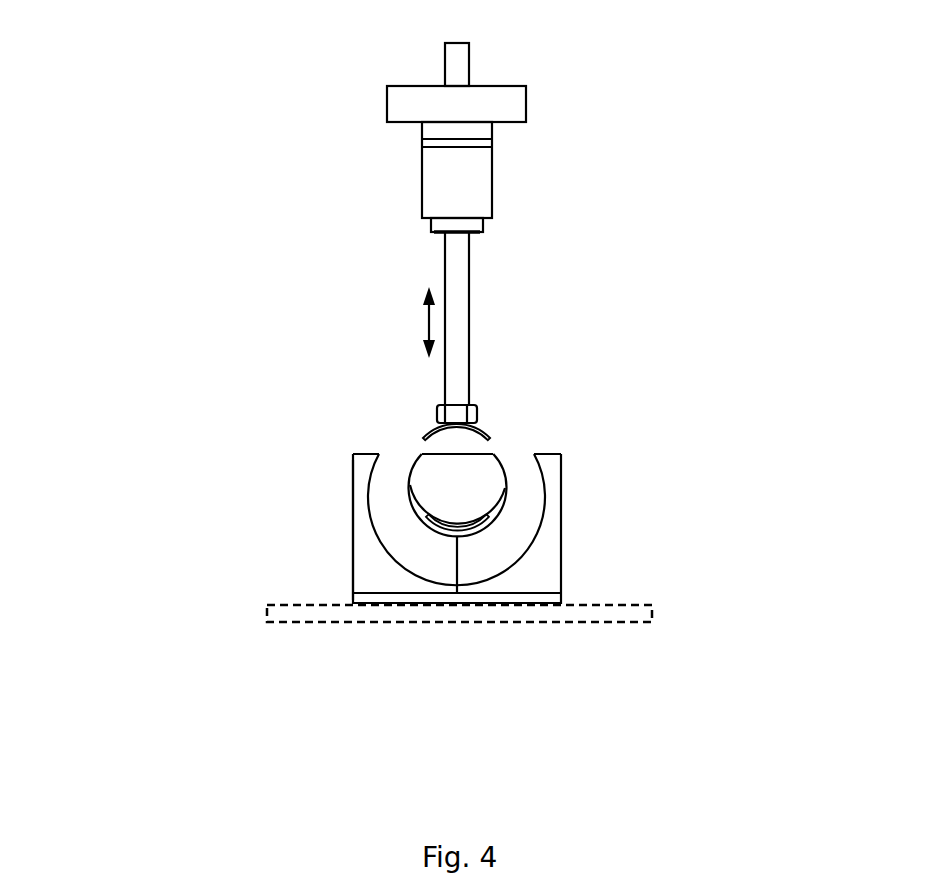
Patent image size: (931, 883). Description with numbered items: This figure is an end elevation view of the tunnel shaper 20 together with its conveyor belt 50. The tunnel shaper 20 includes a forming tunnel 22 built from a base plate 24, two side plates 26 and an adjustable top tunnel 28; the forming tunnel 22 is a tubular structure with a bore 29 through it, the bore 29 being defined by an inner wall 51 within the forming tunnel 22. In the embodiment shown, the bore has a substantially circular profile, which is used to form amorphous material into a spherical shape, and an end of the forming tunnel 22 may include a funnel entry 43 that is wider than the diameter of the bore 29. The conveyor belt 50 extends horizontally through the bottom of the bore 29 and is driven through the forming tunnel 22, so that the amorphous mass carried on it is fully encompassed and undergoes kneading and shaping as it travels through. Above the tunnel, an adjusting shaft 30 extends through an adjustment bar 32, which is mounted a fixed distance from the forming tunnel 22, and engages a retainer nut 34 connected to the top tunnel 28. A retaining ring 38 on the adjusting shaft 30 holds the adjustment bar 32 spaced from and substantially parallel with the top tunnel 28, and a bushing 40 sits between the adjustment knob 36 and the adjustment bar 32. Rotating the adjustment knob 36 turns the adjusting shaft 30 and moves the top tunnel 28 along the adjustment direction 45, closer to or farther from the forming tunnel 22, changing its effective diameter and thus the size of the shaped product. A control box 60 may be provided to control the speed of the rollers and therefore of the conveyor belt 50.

The tunnel shaper 20 is at (190, 115).
The forming tunnel 22 is at (477, 504).
The base plate 24 is at (561, 597).
The side plate 26 is at (363, 530).
The adjustable top tunnel 28 is at (490, 428).
The bore 29 is at (472, 488).
The adjusting shaft 30 is at (469, 318).
The adjustment bar 32 is at (492, 180).
The retainer nut 34 is at (437, 420).
The adjustment knob 36 is at (526, 105).
The retaining ring 38 is at (430, 228).
The bushing 40 is at (422, 143).
The funnel entry 43 is at (522, 516).
The adjustment direction 45 is at (424, 323).
The conveyor belt 50 is at (437, 532).
The inner wall 51 is at (410, 497).
The control box 60 is at (642, 623).